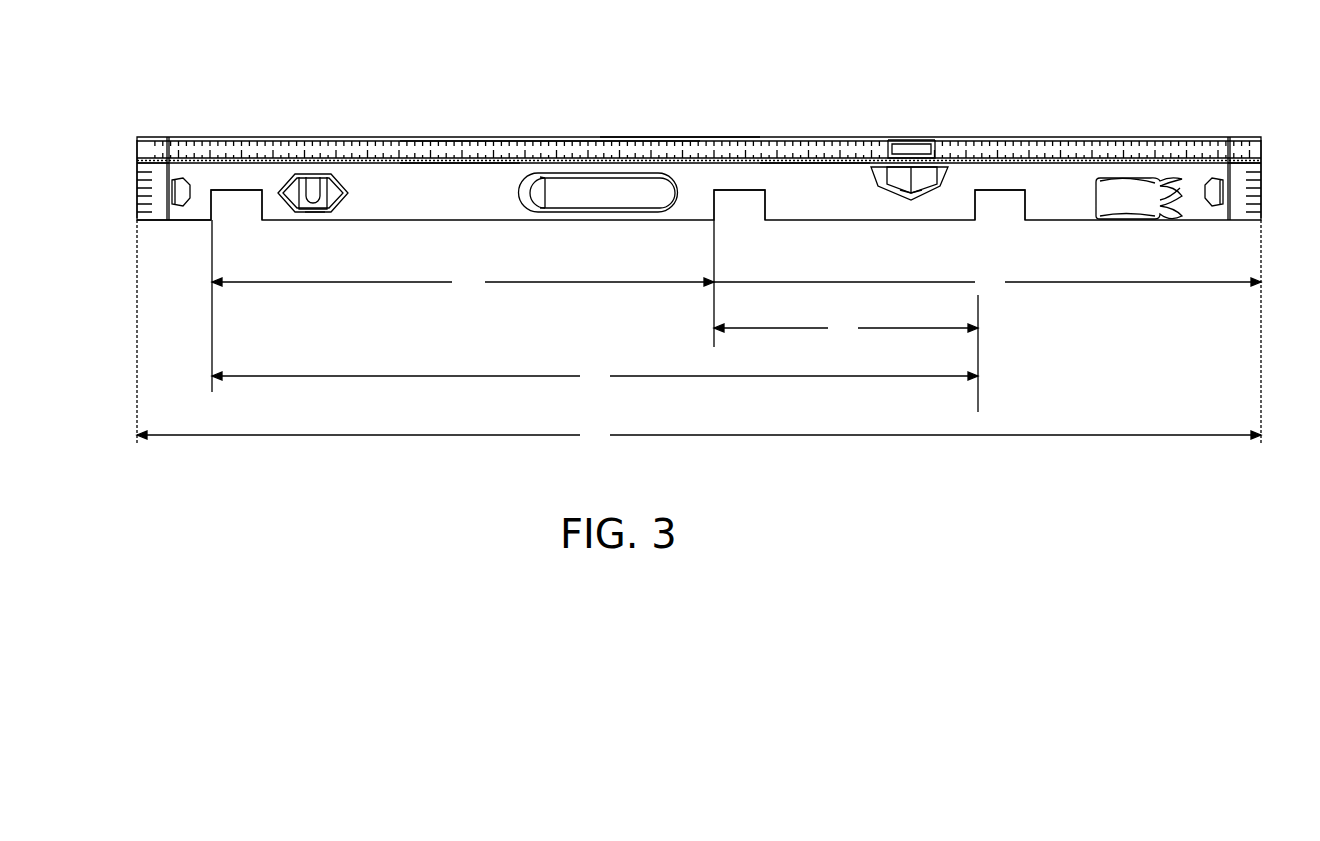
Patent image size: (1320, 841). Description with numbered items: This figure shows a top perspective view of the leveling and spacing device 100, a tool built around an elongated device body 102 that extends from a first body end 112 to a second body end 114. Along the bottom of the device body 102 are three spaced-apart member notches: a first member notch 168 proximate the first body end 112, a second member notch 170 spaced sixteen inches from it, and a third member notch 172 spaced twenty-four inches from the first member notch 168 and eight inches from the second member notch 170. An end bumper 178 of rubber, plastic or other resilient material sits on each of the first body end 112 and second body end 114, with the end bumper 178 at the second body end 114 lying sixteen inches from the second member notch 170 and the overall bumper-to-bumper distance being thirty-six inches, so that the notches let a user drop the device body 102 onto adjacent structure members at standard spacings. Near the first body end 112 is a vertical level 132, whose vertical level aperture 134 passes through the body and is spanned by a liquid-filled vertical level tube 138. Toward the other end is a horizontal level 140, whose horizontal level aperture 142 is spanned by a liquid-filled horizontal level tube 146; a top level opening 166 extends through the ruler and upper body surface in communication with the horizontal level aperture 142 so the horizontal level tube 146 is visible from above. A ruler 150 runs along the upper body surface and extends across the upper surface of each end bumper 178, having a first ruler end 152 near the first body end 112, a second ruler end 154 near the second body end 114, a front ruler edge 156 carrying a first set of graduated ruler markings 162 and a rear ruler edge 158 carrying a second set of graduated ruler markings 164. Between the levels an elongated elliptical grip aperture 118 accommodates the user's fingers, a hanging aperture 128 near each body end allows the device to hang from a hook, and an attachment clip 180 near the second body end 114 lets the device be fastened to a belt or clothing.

The leveling and spacing device 100 is at (423, 62).
The device body 102 is at (193, 230).
The first body end 112 is at (165, 215).
The second body end 114 is at (1240, 215).
The grip aperture 118 is at (612, 222).
The hanging aperture 128 is at (187, 172).
The vertical level 132 is at (343, 170).
The vertical level aperture 134 is at (316, 222).
The vertical level tube 138 is at (312, 137).
The horizontal level 140 is at (955, 177).
The horizontal level aperture 142 is at (929, 206).
The horizontal level tube 146 is at (910, 137).
The ruler 150 is at (742, 130).
The first ruler end 152 is at (170, 137).
The second ruler end 154 is at (1232, 148).
The front ruler edge 156 is at (473, 165).
The rear ruler edge 158 is at (545, 137).
The first set of graduated ruler markings 162 is at (768, 163).
The second set of graduated ruler markings 164 is at (733, 137).
The top level opening 166 is at (893, 137).
The first member notch 168 is at (238, 228).
The second member notch 170 is at (742, 228).
The third member notch 172 is at (1000, 228).
The end bumper 178 is at (137, 180).
The attachment clip 180 is at (1128, 205).